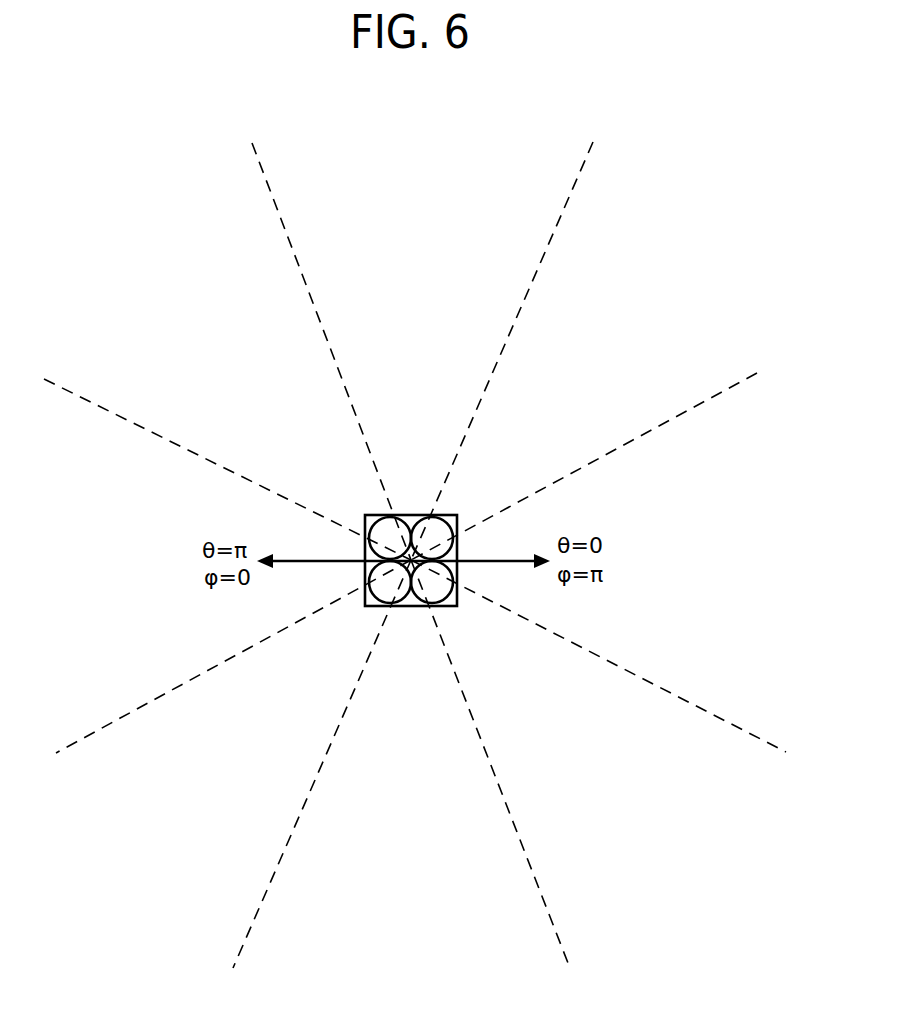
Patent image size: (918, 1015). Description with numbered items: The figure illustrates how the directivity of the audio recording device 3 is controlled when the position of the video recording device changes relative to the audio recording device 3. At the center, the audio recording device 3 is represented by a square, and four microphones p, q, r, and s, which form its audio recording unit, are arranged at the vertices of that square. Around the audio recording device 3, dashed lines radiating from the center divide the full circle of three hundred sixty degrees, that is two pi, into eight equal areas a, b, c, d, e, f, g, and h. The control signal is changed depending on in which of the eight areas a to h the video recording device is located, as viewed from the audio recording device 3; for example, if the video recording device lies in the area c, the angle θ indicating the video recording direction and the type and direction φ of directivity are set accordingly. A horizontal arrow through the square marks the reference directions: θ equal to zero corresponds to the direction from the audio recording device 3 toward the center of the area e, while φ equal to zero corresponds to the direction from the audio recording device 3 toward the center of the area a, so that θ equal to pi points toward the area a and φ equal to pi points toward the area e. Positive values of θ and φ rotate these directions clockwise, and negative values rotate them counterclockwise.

The audio recording device 3 is at (411, 590).
The microphone p is at (390, 538).
The microphone q is at (432, 538).
The microphone r is at (390, 582).
The microphone s is at (432, 582).
The area a is at (131, 566).
The area b is at (206, 371).
The area c is at (418, 296).
The area d is at (591, 371).
The area e is at (669, 574).
The area f is at (591, 781).
The area g is at (401, 854).
The area h is at (219, 781).